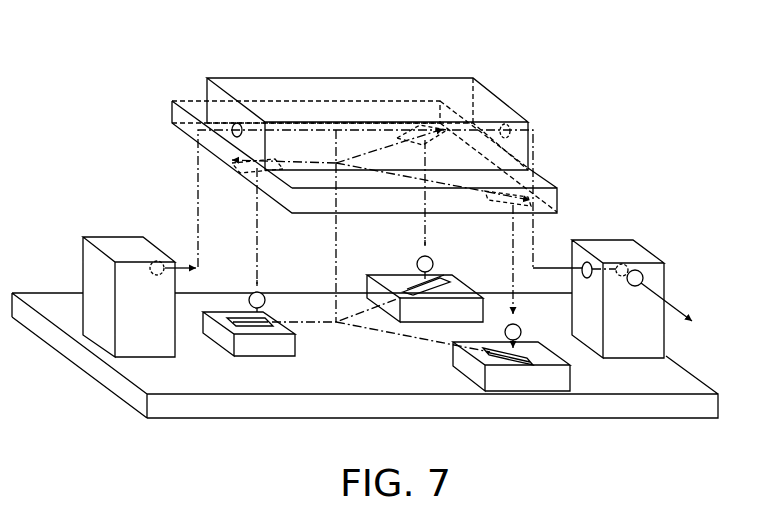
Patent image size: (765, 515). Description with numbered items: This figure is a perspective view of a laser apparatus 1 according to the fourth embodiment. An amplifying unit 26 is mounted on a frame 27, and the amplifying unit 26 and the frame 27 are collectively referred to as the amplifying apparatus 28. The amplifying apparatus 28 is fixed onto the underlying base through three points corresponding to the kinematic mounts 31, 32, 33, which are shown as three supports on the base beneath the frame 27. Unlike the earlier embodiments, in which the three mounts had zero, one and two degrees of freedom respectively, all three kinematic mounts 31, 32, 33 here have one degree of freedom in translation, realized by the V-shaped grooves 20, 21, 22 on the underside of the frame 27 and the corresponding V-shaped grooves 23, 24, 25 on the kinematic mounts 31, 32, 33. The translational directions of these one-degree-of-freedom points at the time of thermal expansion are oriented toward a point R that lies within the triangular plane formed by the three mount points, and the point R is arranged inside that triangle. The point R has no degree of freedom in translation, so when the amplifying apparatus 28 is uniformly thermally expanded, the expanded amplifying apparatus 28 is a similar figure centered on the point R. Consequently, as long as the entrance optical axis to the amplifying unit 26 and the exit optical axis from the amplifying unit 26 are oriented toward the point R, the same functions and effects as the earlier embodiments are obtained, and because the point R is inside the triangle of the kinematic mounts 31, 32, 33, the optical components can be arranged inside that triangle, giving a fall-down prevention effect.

The laser apparatus 1 is at (87, 167).
The V-shaped groove 20 is at (240, 170).
The V-shaped groove 21 is at (430, 128).
The V-shaped groove 22 is at (533, 158).
The V-shaped groove 23 is at (260, 327).
The V-shaped groove 24 is at (425, 300).
The V-shaped groove 25 is at (482, 393).
The amplifying unit 26 is at (207, 78).
The frame 27 is at (173, 101).
The amplifying apparatus 28 is at (98, 13).
The kinematic mount 31 is at (272, 348).
The kinematic mount 32 is at (392, 309).
The kinematic mount 33 is at (558, 388).
The point R is at (381, 324).